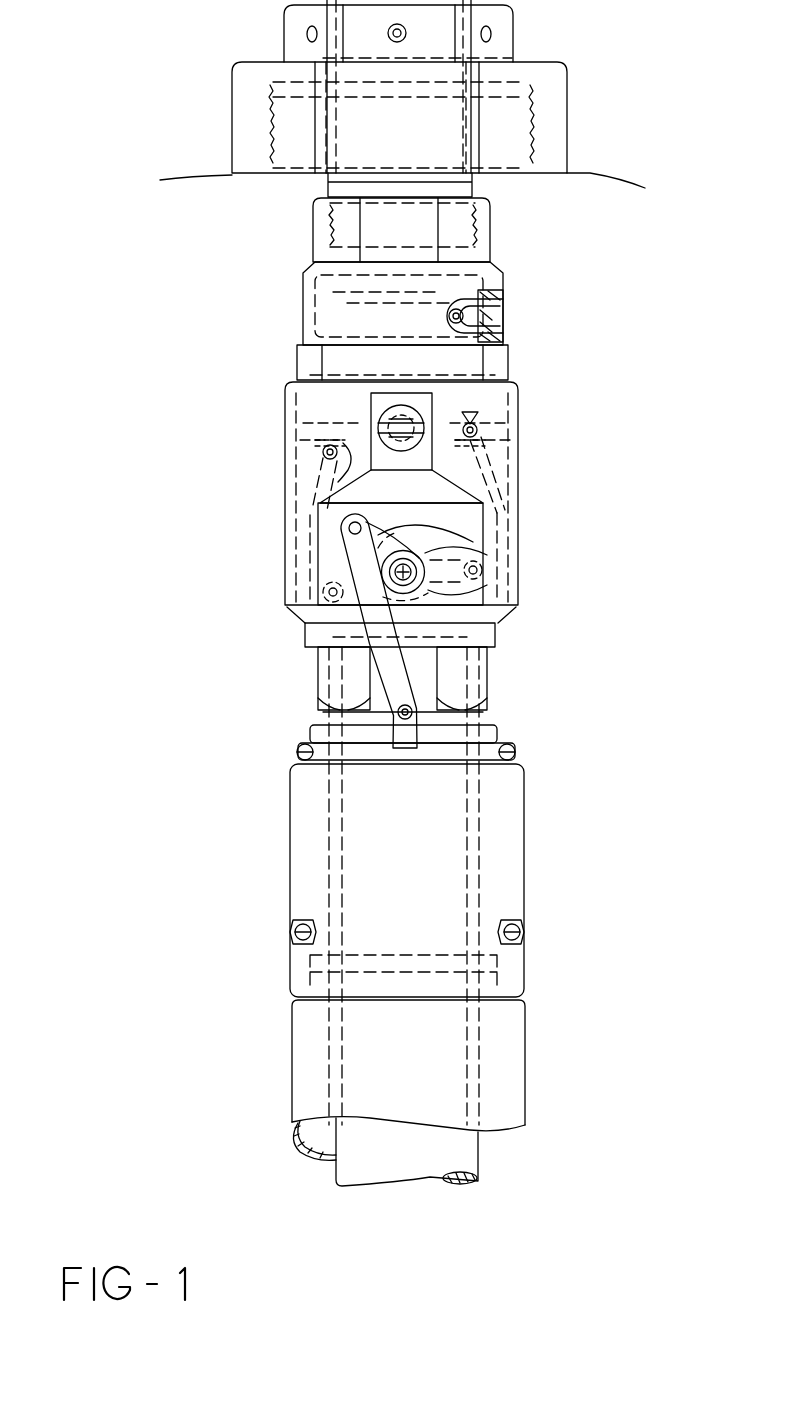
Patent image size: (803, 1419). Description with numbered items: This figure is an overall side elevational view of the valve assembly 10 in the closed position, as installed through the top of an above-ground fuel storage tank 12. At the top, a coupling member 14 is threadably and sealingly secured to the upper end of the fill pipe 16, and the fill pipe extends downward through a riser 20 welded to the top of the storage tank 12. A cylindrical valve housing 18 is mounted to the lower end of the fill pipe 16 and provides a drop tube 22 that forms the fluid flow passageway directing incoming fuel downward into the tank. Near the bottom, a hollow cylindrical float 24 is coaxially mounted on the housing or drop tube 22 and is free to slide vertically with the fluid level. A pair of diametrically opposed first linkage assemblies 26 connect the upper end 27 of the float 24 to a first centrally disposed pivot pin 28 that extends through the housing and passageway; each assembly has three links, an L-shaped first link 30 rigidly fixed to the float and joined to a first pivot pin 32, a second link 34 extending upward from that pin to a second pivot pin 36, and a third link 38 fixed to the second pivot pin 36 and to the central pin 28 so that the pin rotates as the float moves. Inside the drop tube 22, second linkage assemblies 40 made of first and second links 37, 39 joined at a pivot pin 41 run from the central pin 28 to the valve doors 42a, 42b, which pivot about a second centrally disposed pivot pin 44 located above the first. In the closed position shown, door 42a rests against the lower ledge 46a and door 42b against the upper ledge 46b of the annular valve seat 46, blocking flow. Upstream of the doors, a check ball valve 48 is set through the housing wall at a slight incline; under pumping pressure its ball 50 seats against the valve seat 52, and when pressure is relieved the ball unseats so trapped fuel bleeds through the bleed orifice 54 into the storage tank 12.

The valve assembly 10 is at (640, 443).
The storage tank 12 is at (590, 173).
The coupling member 14 is at (527, 112).
The fill pipe 16 is at (485, 75).
The valve housing 18 is at (518, 400).
The riser 20 is at (232, 97).
The drop tube 22 is at (303, 592).
The float 24 is at (523, 843).
The first linkage assemblies 26 is at (327, 653).
The upper end 27 is at (483, 723).
The first centrally disposed pivot pin 28 is at (490, 548).
The first link 30 is at (372, 762).
The first pivot pin 32 is at (405, 762).
The second link 34 is at (478, 647).
The second pivot pin 36 is at (320, 525).
The first link 37 is at (490, 600).
The third link 38 is at (485, 533).
The second link 39 is at (317, 490).
The second linkage assemblies 40 is at (478, 462).
The pivot pin 41 is at (330, 603).
The valve door 42a is at (322, 446).
The valve door 42b is at (475, 430).
The second centrally disposed pivot pin 44 is at (372, 396).
The annular valve seat 46 is at (340, 440).
The lower ledge 46a is at (401, 488).
The upper ledge 46b is at (470, 412).
The check ball valve 48 is at (477, 293).
The ball 50 is at (502, 325).
The valve seat 52 is at (502, 301).
The bleed orifice 54 is at (502, 306).